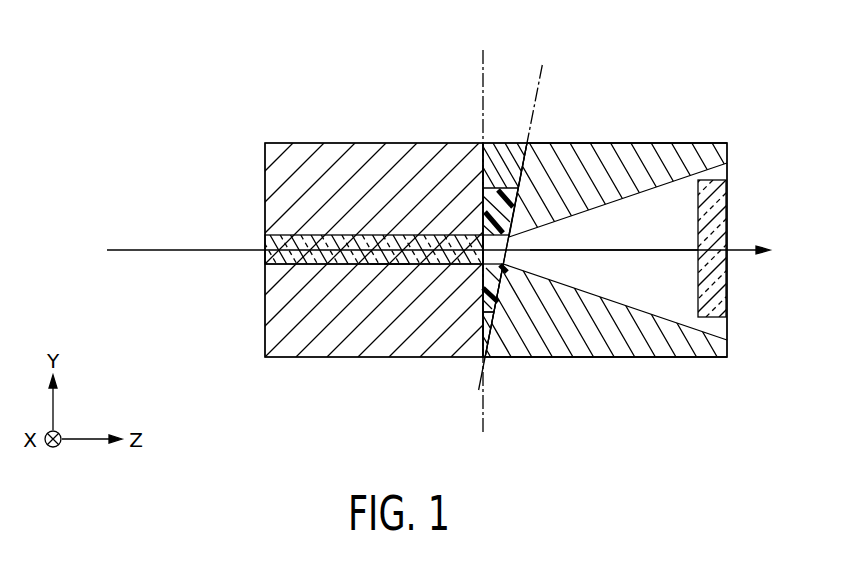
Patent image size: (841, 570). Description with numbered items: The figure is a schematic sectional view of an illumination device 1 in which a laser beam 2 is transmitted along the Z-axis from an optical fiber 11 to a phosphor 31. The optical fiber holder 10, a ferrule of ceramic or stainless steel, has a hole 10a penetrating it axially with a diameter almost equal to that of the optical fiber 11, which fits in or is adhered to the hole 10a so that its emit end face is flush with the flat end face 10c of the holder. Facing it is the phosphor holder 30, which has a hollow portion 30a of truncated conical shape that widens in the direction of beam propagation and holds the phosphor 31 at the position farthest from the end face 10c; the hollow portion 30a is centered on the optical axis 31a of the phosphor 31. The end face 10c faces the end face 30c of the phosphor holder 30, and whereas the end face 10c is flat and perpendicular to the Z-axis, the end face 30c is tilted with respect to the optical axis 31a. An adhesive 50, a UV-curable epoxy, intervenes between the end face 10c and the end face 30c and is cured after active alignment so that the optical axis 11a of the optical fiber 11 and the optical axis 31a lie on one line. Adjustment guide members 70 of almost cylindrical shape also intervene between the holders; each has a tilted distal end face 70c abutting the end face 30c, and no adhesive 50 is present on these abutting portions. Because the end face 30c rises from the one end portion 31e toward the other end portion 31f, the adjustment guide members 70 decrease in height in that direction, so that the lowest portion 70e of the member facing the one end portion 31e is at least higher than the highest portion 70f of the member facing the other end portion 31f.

The illumination device 1 is at (186, 142).
The laser beam 2 is at (471, 65).
The optical fiber holder 10 is at (333, 343).
The hole 10a is at (298, 266).
The end face 10c is at (481, 172).
The optical fiber 11 is at (265, 255).
The optical axis 11a is at (388, 266).
The phosphor holder 30 is at (620, 338).
The hollow portion 30a is at (675, 357).
The end face 30c is at (567, 143).
The phosphor 31 is at (716, 345).
The optical axis 31a is at (643, 252).
The one end portion 31e is at (522, 178).
The other end portion 31f is at (525, 340).
The adhesive 50 is at (480, 313).
The adjustment guide members 70 is at (505, 150).
The distal end face 70c is at (513, 143).
The lowest portion 70e is at (547, 217).
The highest portion 70f is at (540, 276).